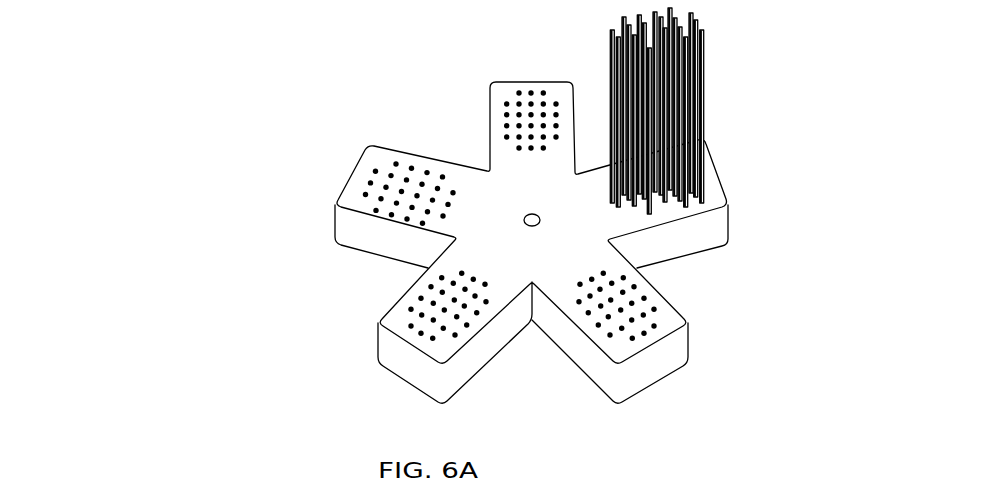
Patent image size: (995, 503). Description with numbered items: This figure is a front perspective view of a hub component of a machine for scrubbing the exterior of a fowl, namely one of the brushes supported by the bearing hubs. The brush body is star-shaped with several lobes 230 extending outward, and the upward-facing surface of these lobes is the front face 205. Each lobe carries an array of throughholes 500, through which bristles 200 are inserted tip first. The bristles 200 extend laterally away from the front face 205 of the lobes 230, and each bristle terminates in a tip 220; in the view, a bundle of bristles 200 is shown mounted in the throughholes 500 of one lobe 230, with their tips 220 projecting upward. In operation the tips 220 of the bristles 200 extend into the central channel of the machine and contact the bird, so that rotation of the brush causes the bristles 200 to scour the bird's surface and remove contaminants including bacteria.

The bristles 200 is at (705, 97).
The front face 205 is at (497, 193).
The tip 220 is at (702, 32).
The lobes 230 is at (376, 309).
The throughholes 500 is at (508, 101).